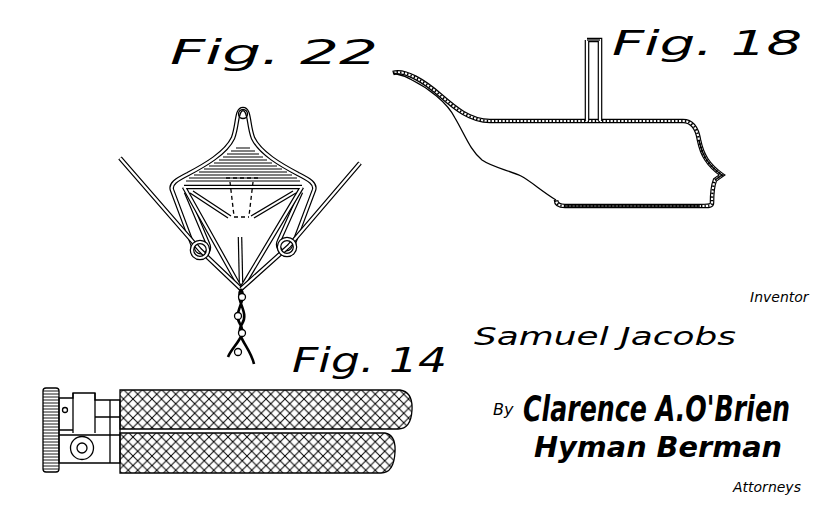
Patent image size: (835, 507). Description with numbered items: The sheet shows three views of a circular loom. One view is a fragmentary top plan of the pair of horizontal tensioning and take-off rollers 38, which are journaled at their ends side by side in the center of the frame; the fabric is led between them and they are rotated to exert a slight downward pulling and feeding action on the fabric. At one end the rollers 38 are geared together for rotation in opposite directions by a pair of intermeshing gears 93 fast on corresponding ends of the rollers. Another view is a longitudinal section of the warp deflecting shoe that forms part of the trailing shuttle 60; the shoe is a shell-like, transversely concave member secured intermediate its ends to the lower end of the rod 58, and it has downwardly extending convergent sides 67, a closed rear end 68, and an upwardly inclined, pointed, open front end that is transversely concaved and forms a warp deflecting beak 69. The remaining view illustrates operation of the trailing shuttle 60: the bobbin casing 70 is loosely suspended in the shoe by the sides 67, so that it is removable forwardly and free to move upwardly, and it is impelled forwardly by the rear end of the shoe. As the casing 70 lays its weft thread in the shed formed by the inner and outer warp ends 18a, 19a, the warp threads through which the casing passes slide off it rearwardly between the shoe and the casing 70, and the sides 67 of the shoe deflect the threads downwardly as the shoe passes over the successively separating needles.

In FIG. 22, the warp deflecting beak 69 is at (257, 131).
In FIG. 18, the warp deflecting beak 69 is at (430, 80).
In FIG. 22, the inner warp end 18a is at (142, 195).
In FIG. 22, the outer warp end 19a is at (330, 210).
In FIG. 22, the convergent sides 67 is at (191, 255).
In FIG. 18, the convergent sides 67 is at (677, 209).
In FIG. 22, the bobbin casing 70 is at (248, 250).
In FIG. 18, the trailing shuttle 60 is at (680, 114).
In FIG. 18, the rod 58 is at (599, 97).
In FIG. 18, the closed rear end 68 is at (712, 158).
In FIG. 14, the intermeshing gears 93 is at (50, 389).
In FIG. 14, the tensioning and take-off rollers 38 is at (166, 440).